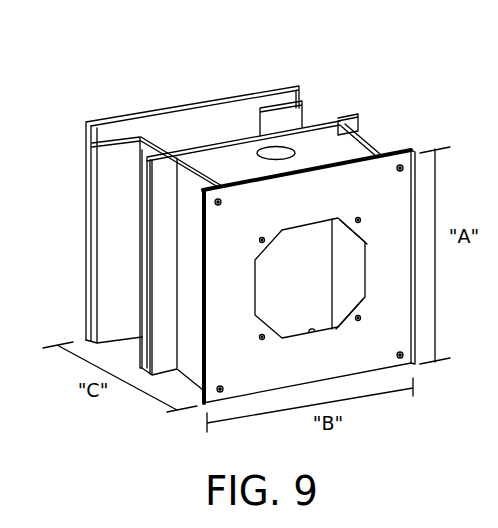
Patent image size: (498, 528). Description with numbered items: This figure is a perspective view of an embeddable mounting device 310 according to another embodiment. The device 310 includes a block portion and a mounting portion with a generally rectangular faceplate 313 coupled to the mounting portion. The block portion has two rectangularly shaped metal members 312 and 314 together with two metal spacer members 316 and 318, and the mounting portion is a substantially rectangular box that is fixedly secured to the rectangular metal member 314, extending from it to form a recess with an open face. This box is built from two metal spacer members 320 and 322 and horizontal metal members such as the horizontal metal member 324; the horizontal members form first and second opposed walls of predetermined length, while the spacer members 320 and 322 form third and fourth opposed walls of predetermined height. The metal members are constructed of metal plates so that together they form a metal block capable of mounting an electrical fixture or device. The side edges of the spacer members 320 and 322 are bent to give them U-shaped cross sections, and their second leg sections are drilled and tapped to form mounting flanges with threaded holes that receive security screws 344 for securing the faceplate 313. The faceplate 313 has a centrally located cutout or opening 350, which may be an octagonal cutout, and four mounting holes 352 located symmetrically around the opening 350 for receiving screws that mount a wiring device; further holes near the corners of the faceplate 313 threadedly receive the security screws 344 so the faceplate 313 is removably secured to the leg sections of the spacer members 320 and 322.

The embeddable mounting device 310 is at (331, 65).
The rectangularly shaped metal member 312 is at (113, 133).
The faceplate 313 is at (300, 211).
The rectangularly shaped metal member 314 is at (192, 150).
The metal spacer member 316 is at (102, 192).
The metal spacer member 318 is at (298, 118).
The metal spacer member 320 is at (165, 243).
The metal spacer member 322 is at (358, 130).
The horizontal metal member 324 is at (230, 160).
The security screws 344 is at (400, 168).
The opening 350 is at (312, 332).
The mounting holes 352 is at (261, 337).